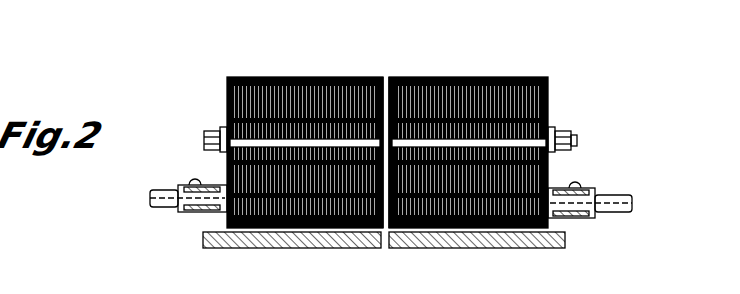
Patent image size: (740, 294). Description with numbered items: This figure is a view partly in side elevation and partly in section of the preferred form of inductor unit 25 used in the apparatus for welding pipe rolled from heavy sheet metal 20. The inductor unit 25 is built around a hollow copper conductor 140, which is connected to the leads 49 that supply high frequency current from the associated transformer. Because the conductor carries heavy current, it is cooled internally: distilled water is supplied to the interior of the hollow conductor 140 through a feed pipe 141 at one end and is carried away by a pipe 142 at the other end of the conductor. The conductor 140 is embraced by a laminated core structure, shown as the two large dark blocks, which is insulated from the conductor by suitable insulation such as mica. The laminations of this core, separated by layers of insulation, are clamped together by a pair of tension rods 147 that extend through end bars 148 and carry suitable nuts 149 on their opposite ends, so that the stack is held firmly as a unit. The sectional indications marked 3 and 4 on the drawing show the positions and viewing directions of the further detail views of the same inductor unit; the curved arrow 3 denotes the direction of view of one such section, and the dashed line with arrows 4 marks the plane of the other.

The sheet metal 20 is at (556, 249).
The inductor unit 25 is at (552, 85).
The leads 49 is at (195, 183).
The hollow copper conductor 140 is at (562, 190).
The feed pipe 141 is at (620, 202).
The pipe 142 is at (150, 205).
The tension rods 147 is at (372, 76).
The end bars 148 is at (555, 130).
The nuts 149 is at (563, 140).
The section view indicator 3 is at (205, 93).
The section line 4 is at (207, 255).